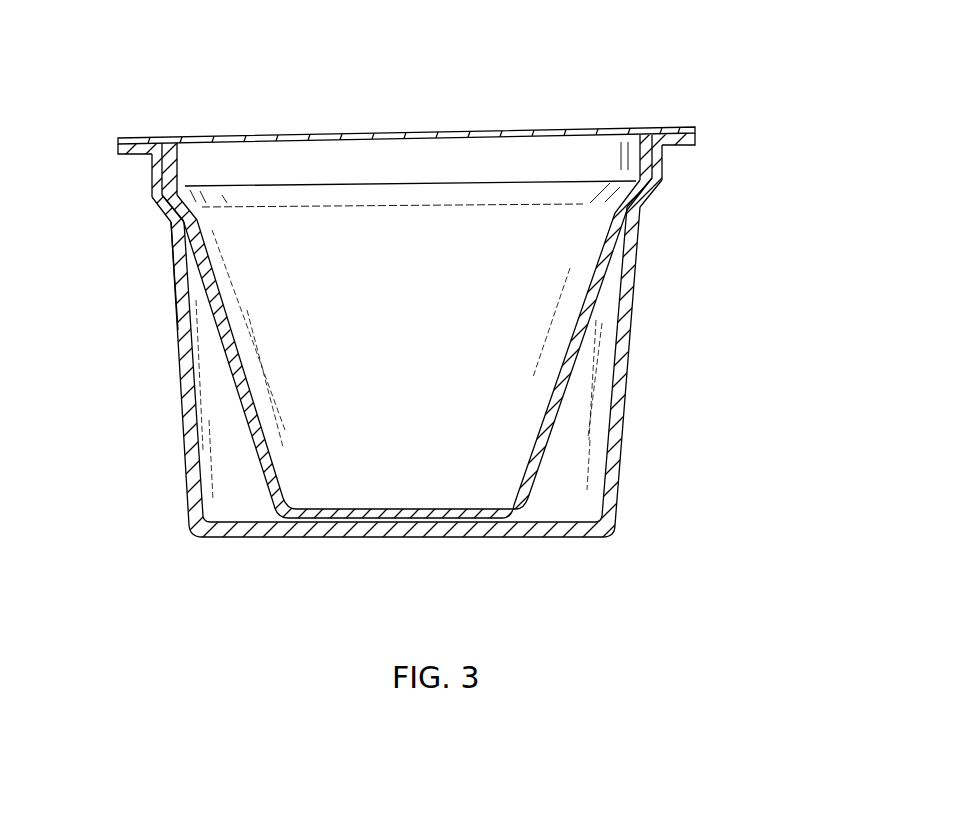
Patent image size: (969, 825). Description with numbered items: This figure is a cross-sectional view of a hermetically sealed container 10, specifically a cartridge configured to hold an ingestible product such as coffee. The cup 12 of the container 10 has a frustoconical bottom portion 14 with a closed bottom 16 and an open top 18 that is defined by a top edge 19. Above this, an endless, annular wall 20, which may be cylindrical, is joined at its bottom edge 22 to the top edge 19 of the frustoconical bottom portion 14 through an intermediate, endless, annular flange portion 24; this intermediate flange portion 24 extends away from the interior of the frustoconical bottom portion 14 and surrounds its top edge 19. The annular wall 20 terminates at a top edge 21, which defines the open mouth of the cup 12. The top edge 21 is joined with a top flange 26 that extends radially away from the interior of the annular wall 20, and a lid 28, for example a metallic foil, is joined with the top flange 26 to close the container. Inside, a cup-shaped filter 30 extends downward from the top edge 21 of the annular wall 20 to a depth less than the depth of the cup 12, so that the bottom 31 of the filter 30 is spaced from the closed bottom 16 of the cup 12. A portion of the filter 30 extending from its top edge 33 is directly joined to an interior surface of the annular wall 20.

The container 10 is at (672, 72).
The cup 12 is at (643, 362).
The frustoconical bottom portion 14 is at (618, 460).
The closed bottom 16 is at (558, 537).
The open top 18 is at (393, 160).
The top edge 19 is at (170, 222).
The annular wall 20 is at (155, 177).
The top edge 21 is at (147, 157).
The bottom edge 22 is at (153, 203).
The intermediate flange portion 24 is at (648, 203).
The top flange 26 is at (692, 141).
The lid 28 is at (512, 128).
The filter 30 is at (537, 477).
The bottom 31 is at (390, 510).
The top edge 33 is at (635, 141).